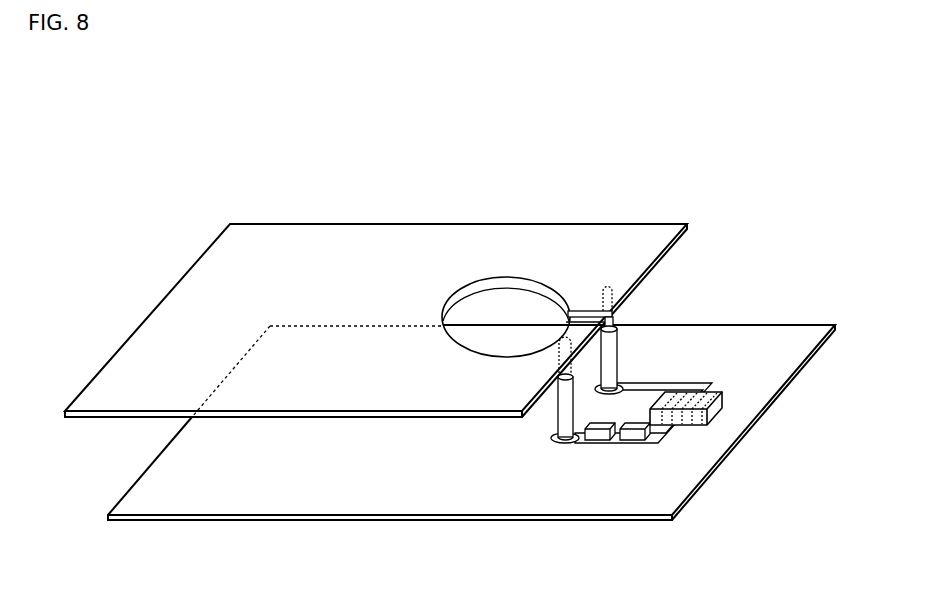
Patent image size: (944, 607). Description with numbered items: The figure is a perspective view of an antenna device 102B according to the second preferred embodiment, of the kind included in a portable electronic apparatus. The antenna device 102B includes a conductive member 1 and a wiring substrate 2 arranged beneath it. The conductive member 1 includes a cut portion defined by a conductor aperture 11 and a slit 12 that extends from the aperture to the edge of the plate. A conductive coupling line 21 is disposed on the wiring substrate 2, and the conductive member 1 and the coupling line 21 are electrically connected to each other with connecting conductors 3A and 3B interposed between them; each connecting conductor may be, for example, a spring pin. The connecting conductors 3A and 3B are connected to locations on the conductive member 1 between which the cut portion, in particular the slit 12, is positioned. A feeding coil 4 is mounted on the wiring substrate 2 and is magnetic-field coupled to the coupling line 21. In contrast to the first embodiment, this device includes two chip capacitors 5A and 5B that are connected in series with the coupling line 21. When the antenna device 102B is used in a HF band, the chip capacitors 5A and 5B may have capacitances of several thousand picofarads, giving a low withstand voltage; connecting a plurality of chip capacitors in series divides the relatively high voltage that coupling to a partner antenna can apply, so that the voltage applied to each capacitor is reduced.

The antenna device 102B is at (790, 138).
The conductive member 1 is at (208, 267).
The wiring substrate 2 is at (788, 337).
The conductor aperture 11 is at (515, 302).
The slit 12 is at (586, 316).
The connecting conductor 3A is at (562, 411).
The connecting conductor 3B is at (612, 340).
The coupling line 21 is at (657, 388).
The feeding coil 4 is at (729, 392).
The chip capacitor 5A is at (598, 440).
The chip capacitor 5B is at (633, 440).